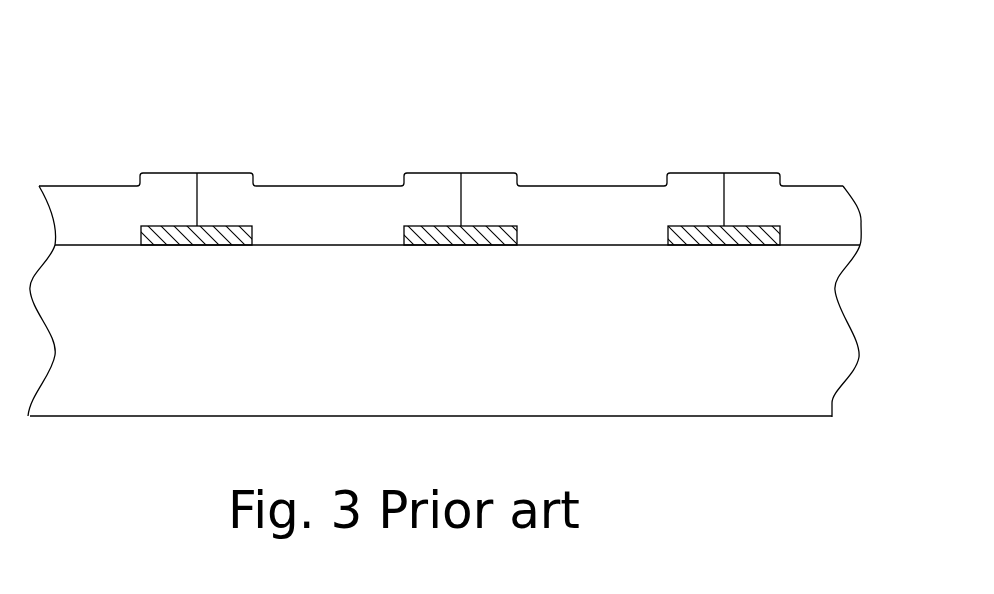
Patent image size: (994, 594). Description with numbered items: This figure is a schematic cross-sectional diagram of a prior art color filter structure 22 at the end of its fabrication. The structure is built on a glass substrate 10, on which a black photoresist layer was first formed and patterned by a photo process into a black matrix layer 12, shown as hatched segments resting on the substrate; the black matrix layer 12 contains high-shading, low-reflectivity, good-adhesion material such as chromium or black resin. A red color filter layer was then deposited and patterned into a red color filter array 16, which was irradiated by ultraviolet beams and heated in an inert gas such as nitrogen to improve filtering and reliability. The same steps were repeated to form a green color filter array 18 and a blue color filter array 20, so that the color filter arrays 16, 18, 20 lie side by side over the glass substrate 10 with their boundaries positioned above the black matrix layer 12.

The glass substrate 10 is at (447, 362).
The black matrix layer 12 is at (766, 238).
The red color filter array 16 is at (337, 207).
The green color filter array 18 is at (593, 207).
The blue color filter array 20 is at (108, 207).
The color filter structure 22 is at (788, 34).